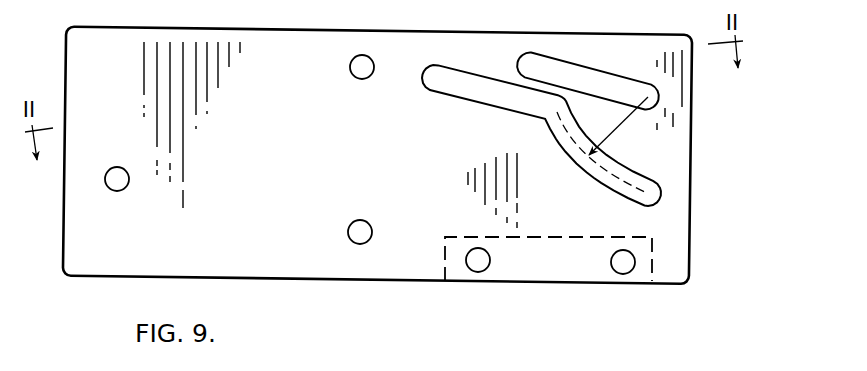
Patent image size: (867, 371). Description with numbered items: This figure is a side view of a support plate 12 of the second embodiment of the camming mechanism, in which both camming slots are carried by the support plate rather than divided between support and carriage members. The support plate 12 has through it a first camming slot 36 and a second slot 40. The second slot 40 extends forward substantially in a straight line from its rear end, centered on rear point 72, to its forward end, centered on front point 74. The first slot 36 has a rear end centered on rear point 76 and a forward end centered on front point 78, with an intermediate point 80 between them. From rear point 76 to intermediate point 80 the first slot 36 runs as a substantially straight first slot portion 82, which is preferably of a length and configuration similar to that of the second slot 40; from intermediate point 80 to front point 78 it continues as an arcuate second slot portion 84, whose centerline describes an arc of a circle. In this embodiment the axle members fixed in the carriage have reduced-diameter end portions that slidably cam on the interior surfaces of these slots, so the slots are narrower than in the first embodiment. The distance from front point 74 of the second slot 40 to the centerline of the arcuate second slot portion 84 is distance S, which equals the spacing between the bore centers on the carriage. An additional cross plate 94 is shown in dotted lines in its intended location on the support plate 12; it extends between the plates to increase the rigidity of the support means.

The support plate 12 is at (226, 170).
The first camming slot 36 is at (541, 138).
The second slot 40 is at (608, 77).
The rear point 72 is at (622, 79).
The front point 74 is at (621, 93).
The rear point 76 is at (541, 138).
The front point 78 is at (647, 193).
The intermediate point 80 is at (541, 138).
The first slot portion 82 is at (541, 138).
The second slot portion 84 is at (541, 138).
The cross plate 94 is at (562, 263).
The distance S is at (618, 126).